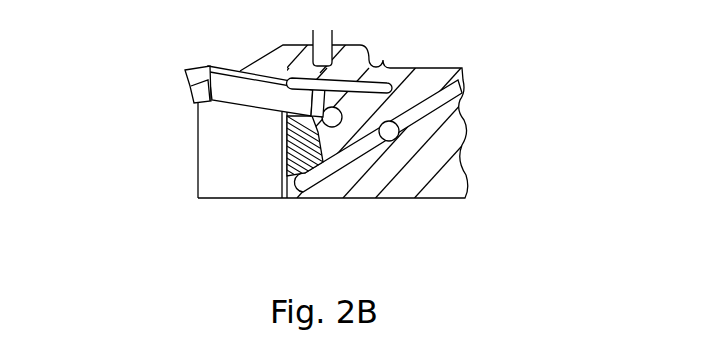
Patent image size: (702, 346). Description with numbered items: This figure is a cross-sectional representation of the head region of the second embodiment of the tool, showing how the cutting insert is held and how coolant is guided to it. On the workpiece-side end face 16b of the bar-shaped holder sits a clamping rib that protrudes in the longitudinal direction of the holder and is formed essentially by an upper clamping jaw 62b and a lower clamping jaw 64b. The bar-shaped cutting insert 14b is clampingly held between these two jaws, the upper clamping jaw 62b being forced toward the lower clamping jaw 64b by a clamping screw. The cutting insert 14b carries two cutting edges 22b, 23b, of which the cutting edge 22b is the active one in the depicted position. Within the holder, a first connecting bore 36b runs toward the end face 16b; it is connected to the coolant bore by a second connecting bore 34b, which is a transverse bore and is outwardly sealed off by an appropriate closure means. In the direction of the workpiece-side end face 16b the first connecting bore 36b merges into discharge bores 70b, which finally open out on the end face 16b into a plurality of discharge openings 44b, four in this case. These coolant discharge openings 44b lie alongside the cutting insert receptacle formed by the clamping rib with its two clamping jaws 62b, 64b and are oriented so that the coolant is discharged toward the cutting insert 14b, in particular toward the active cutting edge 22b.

The cutting insert 14b is at (225, 87).
The cutting edge 22b is at (186, 71).
The upper clamping jaw 62b is at (263, 67).
The first connecting bore 36b is at (415, 115).
The workpiece-side end face 16b is at (281, 133).
The lower clamping jaw 64b is at (208, 173).
The discharge openings 44b is at (281, 150).
The discharge bores 70b is at (289, 176).
The cutting edge 23b is at (333, 128).
The second connecting bore 34b is at (393, 141).